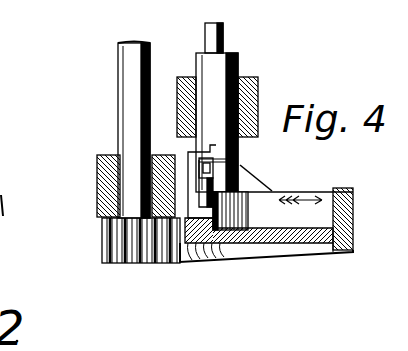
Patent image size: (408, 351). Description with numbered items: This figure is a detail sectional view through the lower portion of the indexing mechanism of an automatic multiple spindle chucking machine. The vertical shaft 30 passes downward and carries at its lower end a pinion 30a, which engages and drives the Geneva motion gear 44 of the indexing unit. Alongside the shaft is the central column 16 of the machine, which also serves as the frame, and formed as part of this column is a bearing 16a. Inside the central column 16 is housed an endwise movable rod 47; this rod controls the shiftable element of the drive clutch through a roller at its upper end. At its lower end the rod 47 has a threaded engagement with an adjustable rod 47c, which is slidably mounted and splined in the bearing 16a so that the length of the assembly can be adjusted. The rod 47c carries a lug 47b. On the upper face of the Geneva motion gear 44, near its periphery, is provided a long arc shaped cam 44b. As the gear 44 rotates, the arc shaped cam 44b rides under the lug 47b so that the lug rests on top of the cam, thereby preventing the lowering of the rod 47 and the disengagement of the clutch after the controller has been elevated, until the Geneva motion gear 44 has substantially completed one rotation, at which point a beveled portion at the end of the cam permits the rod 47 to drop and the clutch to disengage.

The shaft 30 is at (122, 98).
The pinion 30a is at (101, 246).
The central column 16 is at (97, 181).
The bearing 16a is at (258, 93).
The endwise movable rod 47 is at (222, 38).
The lug 47b is at (200, 152).
The adjustable rod 47c is at (243, 152).
The Geneva motion gear 44 is at (273, 254).
The arc shaped cam 44b is at (307, 189).